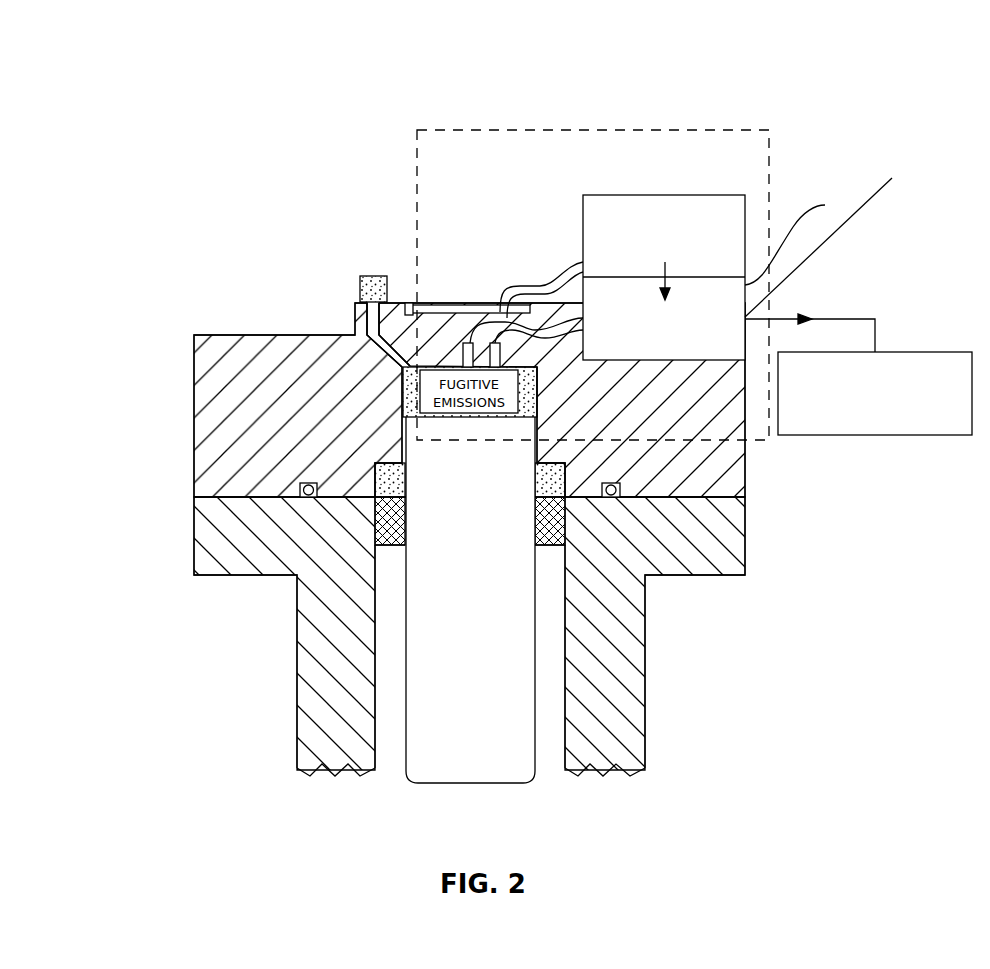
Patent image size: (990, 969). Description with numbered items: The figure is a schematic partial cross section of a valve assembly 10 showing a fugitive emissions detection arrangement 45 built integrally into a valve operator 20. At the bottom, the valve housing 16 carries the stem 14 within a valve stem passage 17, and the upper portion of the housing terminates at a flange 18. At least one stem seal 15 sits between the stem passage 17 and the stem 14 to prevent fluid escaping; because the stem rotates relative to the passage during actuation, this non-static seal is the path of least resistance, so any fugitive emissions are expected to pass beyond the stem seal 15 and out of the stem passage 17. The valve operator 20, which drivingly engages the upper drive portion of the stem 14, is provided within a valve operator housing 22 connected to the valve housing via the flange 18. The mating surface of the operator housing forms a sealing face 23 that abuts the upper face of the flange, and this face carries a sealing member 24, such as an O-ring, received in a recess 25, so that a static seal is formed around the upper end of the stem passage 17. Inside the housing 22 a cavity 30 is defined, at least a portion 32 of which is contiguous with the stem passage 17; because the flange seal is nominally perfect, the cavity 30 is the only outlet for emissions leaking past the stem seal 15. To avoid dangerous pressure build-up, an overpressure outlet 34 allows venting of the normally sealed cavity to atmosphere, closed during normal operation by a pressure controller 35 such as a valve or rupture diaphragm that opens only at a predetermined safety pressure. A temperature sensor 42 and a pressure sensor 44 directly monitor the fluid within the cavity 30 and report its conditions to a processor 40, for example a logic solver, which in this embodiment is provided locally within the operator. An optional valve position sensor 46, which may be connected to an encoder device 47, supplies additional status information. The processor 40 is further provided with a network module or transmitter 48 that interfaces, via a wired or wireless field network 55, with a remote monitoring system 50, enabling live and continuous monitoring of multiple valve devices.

The valve assembly 10 is at (722, 655).
The stem 14 is at (470, 765).
The stem seal 15 is at (572, 540).
The housing 16 is at (308, 687).
The valve stem passage 17 is at (398, 750).
The flange 18 is at (202, 532).
The valve operator 20 is at (142, 358).
The valve operator housing 22 is at (240, 353).
The sealing face 23 is at (723, 500).
The sealing member 24 is at (305, 485).
The recess 25 is at (307, 483).
The cavity 30 is at (410, 313).
The contiguous portion of the cavity 32 is at (398, 462).
The overpressure outlet 34 is at (357, 318).
The pressure controller 35 is at (372, 277).
The processor 40 is at (801, 239).
The temperature sensor 42 is at (465, 343).
The pressure sensor 44 is at (537, 312).
The fugitive emissions detection arrangement 45 is at (550, 128).
The valve position sensor 46 is at (693, 195).
The encoder device 47 is at (480, 302).
The network module or transmitter 48 is at (840, 236).
The remote monitoring system 50 is at (915, 352).
The field network 55 is at (872, 270).